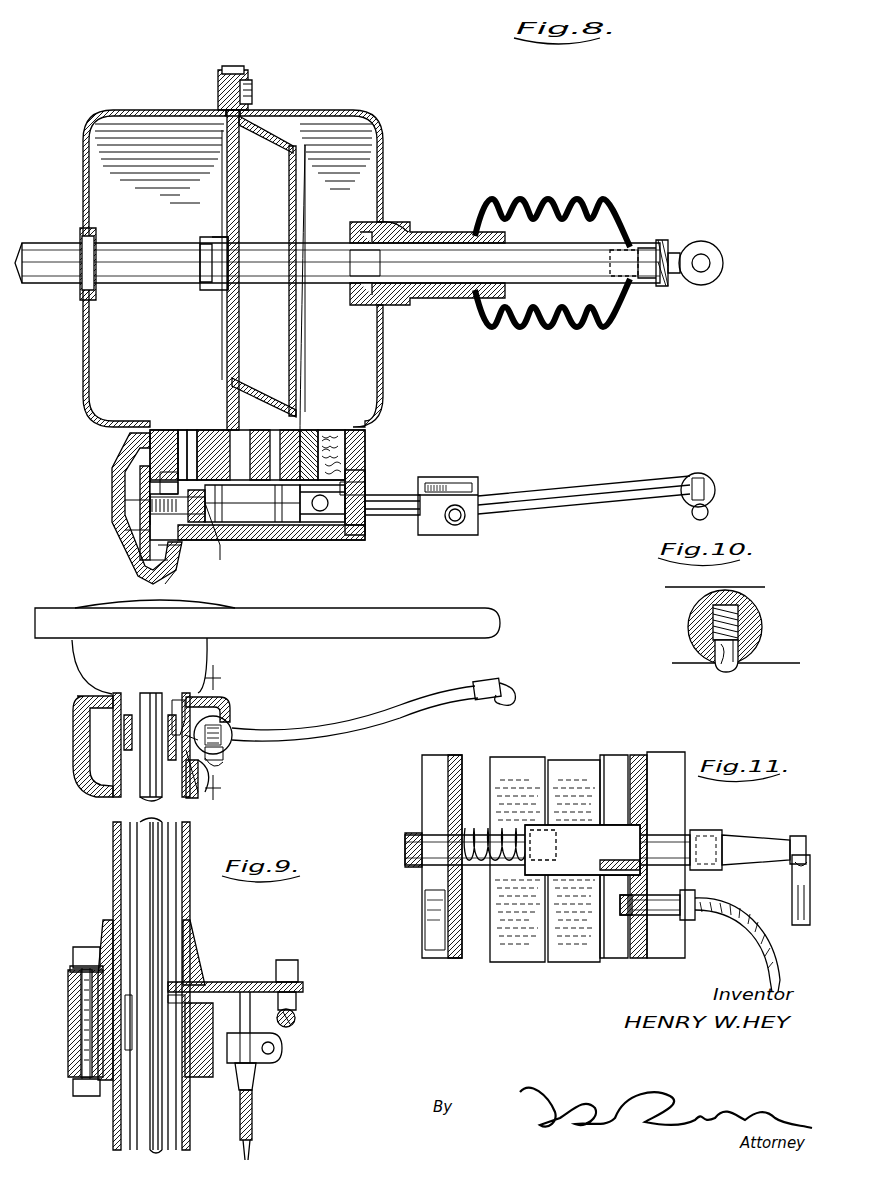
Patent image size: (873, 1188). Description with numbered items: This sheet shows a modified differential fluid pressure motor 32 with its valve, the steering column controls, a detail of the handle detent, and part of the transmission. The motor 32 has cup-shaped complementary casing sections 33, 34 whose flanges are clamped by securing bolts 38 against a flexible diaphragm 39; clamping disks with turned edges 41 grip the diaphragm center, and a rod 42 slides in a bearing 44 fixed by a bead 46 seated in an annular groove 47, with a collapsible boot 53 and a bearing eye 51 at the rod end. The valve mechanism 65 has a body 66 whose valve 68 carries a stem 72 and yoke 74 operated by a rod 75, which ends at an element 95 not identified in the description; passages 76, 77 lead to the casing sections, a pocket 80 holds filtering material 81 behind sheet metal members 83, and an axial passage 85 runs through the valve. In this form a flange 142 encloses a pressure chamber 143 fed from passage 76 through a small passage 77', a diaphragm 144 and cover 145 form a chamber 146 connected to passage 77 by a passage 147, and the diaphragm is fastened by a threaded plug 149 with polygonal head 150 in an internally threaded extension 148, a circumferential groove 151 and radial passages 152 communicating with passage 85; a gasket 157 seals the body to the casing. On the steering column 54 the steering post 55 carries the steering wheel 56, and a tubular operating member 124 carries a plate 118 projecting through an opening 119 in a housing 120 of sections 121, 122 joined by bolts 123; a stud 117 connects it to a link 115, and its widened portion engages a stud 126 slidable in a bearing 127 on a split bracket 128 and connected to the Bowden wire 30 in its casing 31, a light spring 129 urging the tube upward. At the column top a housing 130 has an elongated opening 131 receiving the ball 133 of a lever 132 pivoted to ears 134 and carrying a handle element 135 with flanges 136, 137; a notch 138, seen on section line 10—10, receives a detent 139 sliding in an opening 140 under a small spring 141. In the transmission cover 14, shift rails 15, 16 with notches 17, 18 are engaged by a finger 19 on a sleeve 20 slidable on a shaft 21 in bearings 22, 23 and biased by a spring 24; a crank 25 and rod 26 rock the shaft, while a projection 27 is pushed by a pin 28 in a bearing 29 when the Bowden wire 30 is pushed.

In FIG. 9, the section line 10— 10 is at (220, 733).
In FIG. 11, the transmission cover 14 is at (446, 772).
In FIG. 11, the first and reverse gear shift rail 15 is at (518, 757).
In FIG. 11, the second and high gear shift rail 16 is at (568, 760).
In FIG. 11, the notch 17 is at (518, 905).
In FIG. 11, the notch 18 is at (582, 850).
In FIG. 11, the depending finger 19 is at (558, 852).
In FIG. 11, the sleeve 20 is at (588, 822).
In FIG. 11, the shaft 21 is at (412, 850).
In FIG. 11, the bearing 22 is at (440, 818).
In FIG. 11, the bearing 23 is at (657, 812).
In FIG. 11, the spring 24 is at (486, 876).
In FIG. 11, the crank 25 is at (752, 838).
In FIG. 11, the rod 26 is at (792, 893).
In FIG. 11, the laterally extending projection 27 is at (600, 925).
In FIG. 11, the pin 28 is at (630, 918).
In FIG. 11, the bearing 29 is at (670, 920).
In FIG. 9, the Bowden wire 30 is at (251, 1148).
In FIG. 11, the Bowden wire 30 is at (772, 972).
In FIG. 9, the casing 31 is at (253, 1120).
In FIG. 11, the casing 31 is at (745, 920).
In FIG. 8, the motor 32 is at (283, 108).
In FIG. 8, the complementary casing section 33 is at (143, 116).
In FIG. 8, the complementary casing section 34 is at (378, 150).
In FIG. 8, the securing bolts 38 is at (216, 93).
In FIG. 8, the flexible diaphragm 39 is at (298, 360).
In FIG. 8, the turned edges 41 is at (226, 336).
In FIG. 8, the rod 42 is at (322, 256).
In FIG. 8, the bearing 44 is at (443, 233).
In FIG. 8, the circumferential groove 46 is at (406, 233).
In FIG. 8, the annular groove 47 is at (410, 250).
In FIG. 8, the bearing eye 51 is at (706, 240).
In FIG. 8, the flexible collapsible boot 53 is at (522, 200).
In FIG. 9, the steering column 54 is at (192, 882).
In FIG. 9, the steering post 55 is at (150, 862).
In FIG. 9, the steering wheel 56 is at (338, 618).
In FIG. 8, the valve mechanism 65 is at (342, 548).
In FIG. 8, the valve body 66 is at (284, 524).
In FIG. 8, the valve 68 is at (237, 524).
In FIG. 8, the reduced stem 72 is at (372, 535).
In FIG. 8, the yoke 74 is at (437, 477).
In FIG. 8, the rod 75 is at (545, 486).
In FIG. 8, the passage 76 is at (192, 430).
In FIG. 8, the passage 77 is at (259, 434).
In FIG. 8, the small passage 77' is at (169, 434).
In FIG. 8, the pocket 80 is at (350, 460).
In FIG. 8, the filtering material 81 is at (312, 430).
In FIG. 8, the sheet metal members 83 is at (356, 476).
In FIG. 8, the axial passage 85 is at (318, 512).
In FIG. 8, the roller 95 is at (710, 500).
In FIG. 9, the link 115 is at (292, 1026).
In FIG. 9, the stud 117 is at (298, 1012).
In FIG. 9, the plate 118 is at (300, 976).
In FIG. 9, the opening 119 is at (200, 1004).
In FIG. 9, the housing 120 is at (212, 968).
In FIG. 9, the housing section 121 is at (206, 942).
In FIG. 9, the housing section 122 is at (72, 1000).
In FIG. 9, the bolts 123 is at (80, 1030).
In FIG. 9, the tubular operating member 124 is at (130, 887).
In FIG. 9, the stud 126 is at (262, 980).
In FIG. 9, the bearing 127 is at (270, 1062).
In FIG. 9, the split bracket 128 is at (234, 1078).
In FIG. 9, the light spring 129 is at (82, 1015).
In FIG. 9, the housing 130 is at (95, 698).
In FIG. 9, the circumferentially elongated opening 131 is at (228, 704).
In FIG. 10, the circumferentially elongated opening 131 is at (760, 586).
In FIG. 9, the lever 132 is at (330, 724).
In FIG. 9, the ball 133 is at (170, 698).
In FIG. 10, the ball 133 is at (700, 606).
In FIG. 9, the ears 134 is at (215, 780).
In FIG. 9, the handle element 135 is at (512, 680).
In FIG. 9, the flange 136 is at (484, 680).
In FIG. 9, the flange 137 is at (500, 702).
In FIG. 9, the notch 138 is at (220, 767).
In FIG. 10, the notch 138 is at (712, 675).
In FIG. 9, the detent 139 is at (226, 754).
In FIG. 10, the detent 139 is at (700, 648).
In FIG. 10, the opening 140 is at (690, 620).
In FIG. 10, the small spring 141 is at (744, 622).
In FIG. 8, the flange 142 is at (170, 578).
In FIG. 8, the pressure chamber 143 is at (170, 556).
In FIG. 8, the diaphragm 144 is at (118, 572).
In FIG. 8, the cover 145 is at (118, 556).
In FIG. 8, the pressure chamber 146 is at (150, 515).
In FIG. 8, the passage 147 is at (148, 442).
In FIG. 8, the internally threaded extension 148 is at (140, 535).
In FIG. 8, the threaded plug 149 is at (160, 485).
In FIG. 8, the polygonal head 150 is at (150, 503).
In FIG. 8, the circumferential groove 151 is at (195, 524).
In FIG. 8, the radial passages 152 is at (220, 548).
In FIG. 8, the packing member 157 is at (355, 428).